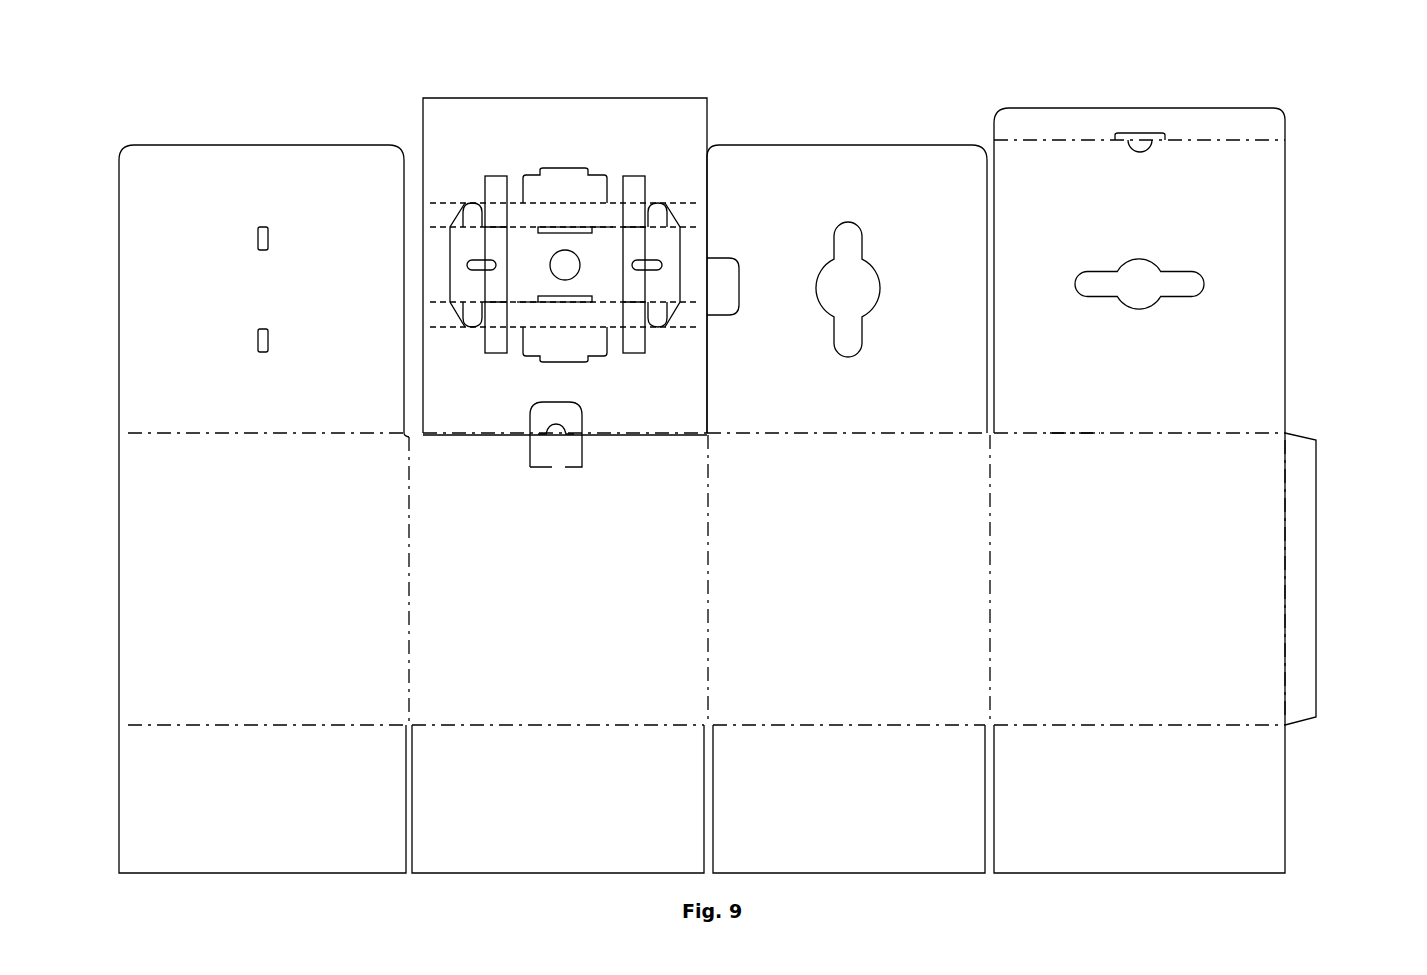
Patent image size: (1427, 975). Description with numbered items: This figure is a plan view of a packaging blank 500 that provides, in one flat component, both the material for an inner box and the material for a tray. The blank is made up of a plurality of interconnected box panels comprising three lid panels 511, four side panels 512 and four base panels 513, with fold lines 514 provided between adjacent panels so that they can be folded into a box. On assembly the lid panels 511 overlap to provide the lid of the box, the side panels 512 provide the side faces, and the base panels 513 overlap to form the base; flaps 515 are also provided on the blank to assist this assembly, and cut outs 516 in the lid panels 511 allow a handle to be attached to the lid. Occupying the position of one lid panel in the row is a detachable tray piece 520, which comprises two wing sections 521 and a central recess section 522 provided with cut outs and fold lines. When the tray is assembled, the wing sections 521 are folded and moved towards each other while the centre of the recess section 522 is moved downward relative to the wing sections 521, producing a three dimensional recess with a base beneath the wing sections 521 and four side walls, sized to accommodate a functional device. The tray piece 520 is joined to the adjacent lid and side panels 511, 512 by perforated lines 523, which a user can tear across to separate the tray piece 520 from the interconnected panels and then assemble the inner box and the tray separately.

The packaging blank 500 is at (197, 118).
The lid panels 511 is at (172, 290).
The side panels 512 is at (240, 628).
The base panels 513 is at (240, 805).
The fold lines 514 is at (1068, 432).
The flaps 515 is at (1237, 125).
The cut outs 516 is at (863, 242).
The tray piece 520 is at (458, 97).
The wing sections 521 is at (605, 130).
The recess section 522 is at (673, 127).
The perforated lines 523 is at (473, 435).